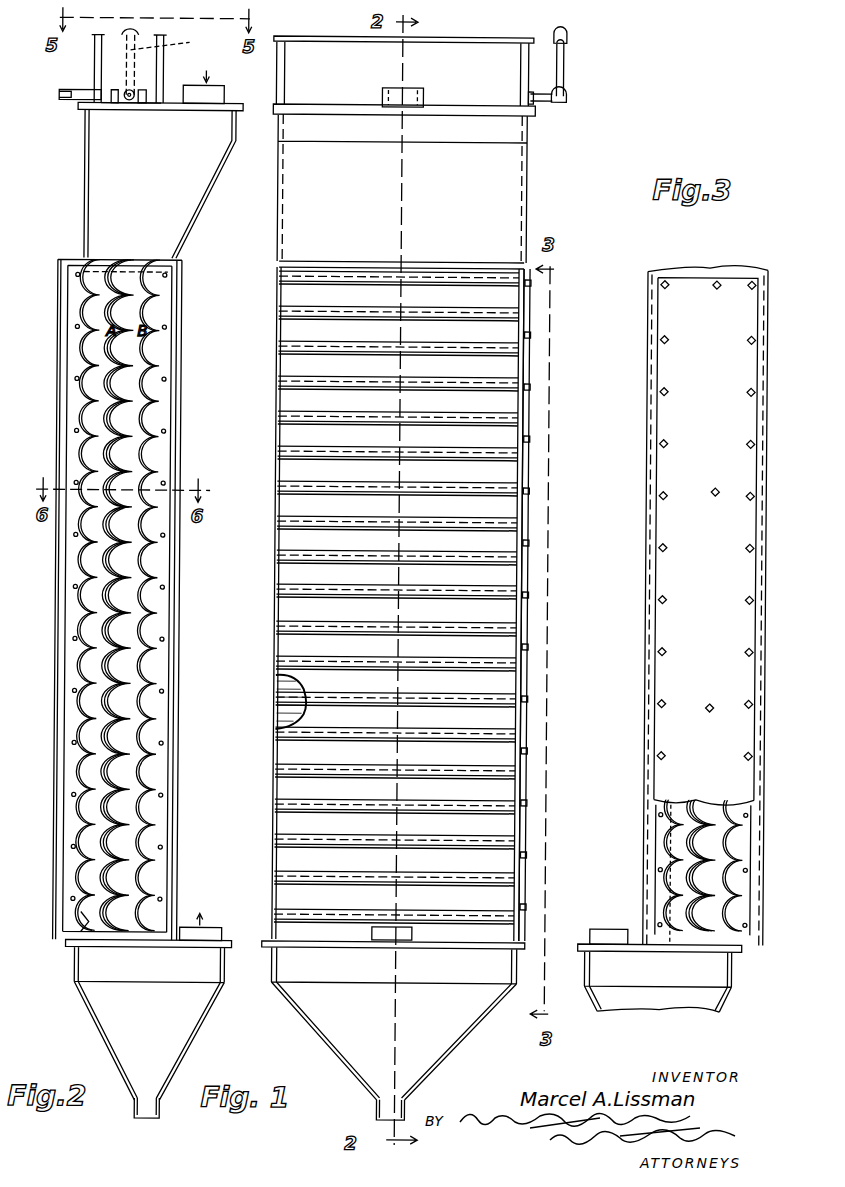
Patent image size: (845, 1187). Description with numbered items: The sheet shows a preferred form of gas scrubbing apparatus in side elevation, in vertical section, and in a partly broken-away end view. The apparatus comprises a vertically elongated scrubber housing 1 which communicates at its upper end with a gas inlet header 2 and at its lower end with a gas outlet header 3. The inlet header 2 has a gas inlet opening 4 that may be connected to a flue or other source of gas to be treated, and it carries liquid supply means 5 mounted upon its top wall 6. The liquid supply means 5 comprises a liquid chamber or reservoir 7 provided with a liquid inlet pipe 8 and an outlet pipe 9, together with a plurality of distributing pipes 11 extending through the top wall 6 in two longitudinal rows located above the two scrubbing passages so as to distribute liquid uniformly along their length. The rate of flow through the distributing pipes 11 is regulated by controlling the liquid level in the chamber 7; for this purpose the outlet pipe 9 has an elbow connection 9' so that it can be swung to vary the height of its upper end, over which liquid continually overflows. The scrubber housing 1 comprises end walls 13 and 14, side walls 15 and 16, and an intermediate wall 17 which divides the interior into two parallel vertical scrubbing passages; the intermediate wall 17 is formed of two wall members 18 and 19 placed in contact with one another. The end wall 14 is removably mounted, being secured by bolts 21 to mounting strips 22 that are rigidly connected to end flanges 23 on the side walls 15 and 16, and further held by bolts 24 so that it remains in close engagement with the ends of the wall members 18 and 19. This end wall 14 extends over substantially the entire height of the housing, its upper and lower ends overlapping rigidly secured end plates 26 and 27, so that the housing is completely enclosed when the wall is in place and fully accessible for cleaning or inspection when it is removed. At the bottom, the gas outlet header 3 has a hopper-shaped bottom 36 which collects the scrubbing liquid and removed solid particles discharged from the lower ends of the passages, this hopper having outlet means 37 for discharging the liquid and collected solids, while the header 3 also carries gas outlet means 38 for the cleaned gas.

In FIG. 2, the scrubber housing 1 is at (155, 633).
In FIG. 1, the scrubber housing 1 is at (274, 621).
In FIG. 2, the gas inlet header 2 is at (205, 192).
In FIG. 1, the gas inlet header 2 is at (527, 190).
In FIG. 2, the gas outlet header 3 is at (230, 965).
In FIG. 1, the gas outlet header 3 is at (392, 962).
In FIG. 3, the gas outlet header 3 is at (738, 972).
In FIG. 2, the gas inlet opening 4 is at (223, 92).
In FIG. 1, the gas inlet opening 4 is at (424, 95).
In FIG. 2, the liquid supply means 5 is at (132, 62).
In FIG. 2, the top wall 6 is at (165, 110).
In FIG. 2, the liquid chamber 7 is at (160, 70).
In FIG. 1, the liquid chamber 7 is at (403, 71).
In FIG. 2, the liquid inlet pipe 8 is at (75, 101).
In FIG. 2, the outlet pipe 9 is at (167, 42).
In FIG. 1, the outlet pipe 9 is at (576, 65).
In FIG. 1, the elbow connection 9' is at (567, 96).
In FIG. 2, the distributing pipes 11 is at (145, 96).
In FIG. 1, the end wall 13 is at (275, 712).
In FIG. 1, the end wall 14 is at (532, 630).
In FIG. 3, the end wall 14 is at (705, 605).
In FIG. 2, the side wall 15 is at (82, 610).
In FIG. 3, the side wall 15 is at (740, 830).
In FIG. 2, the side wall 16 is at (150, 590).
In FIG. 1, the side wall 16 is at (287, 432).
In FIG. 3, the side wall 16 is at (673, 802).
In FIG. 2, the intermediate wall 17 is at (126, 424).
In FIG. 3, the intermediate wall 17 is at (697, 838).
In FIG. 2, the wall member 18 is at (122, 438).
In FIG. 3, the wall member 18 is at (721, 856).
In FIG. 2, the wall member 19 is at (128, 440).
In FIG. 3, the wall member 19 is at (695, 880).
In FIG. 2, the bolts 21 is at (74, 652).
In FIG. 1, the bolts 21 is at (533, 648).
In FIG. 3, the bolts 21 is at (655, 612).
In FIG. 2, the mounting strips 22 is at (70, 718).
In FIG. 3, the mounting strips 22 is at (645, 830).
In FIG. 2, the end flanges 23 is at (68, 752).
In FIG. 1, the end flanges 23 is at (522, 734).
In FIG. 3, the end flanges 23 is at (768, 430).
In FIG. 2, the bolts 24 is at (76, 700).
In FIG. 3, the bolts 24 is at (719, 488).
In FIG. 2, the end plate 26 is at (98, 275).
In FIG. 2, the end plate 27 is at (104, 930).
In FIG. 2, the hopper-shaped bottom 36 is at (206, 1038).
In FIG. 1, the hopper-shaped bottom 36 is at (468, 1043).
In FIG. 3, the hopper-shaped bottom 36 is at (727, 1000).
In FIG. 2, the outlet means 37 is at (166, 1106).
In FIG. 2, the gas outlet means 38 is at (217, 928).
In FIG. 1, the gas outlet means 38 is at (419, 935).
In FIG. 3, the gas outlet means 38 is at (605, 930).